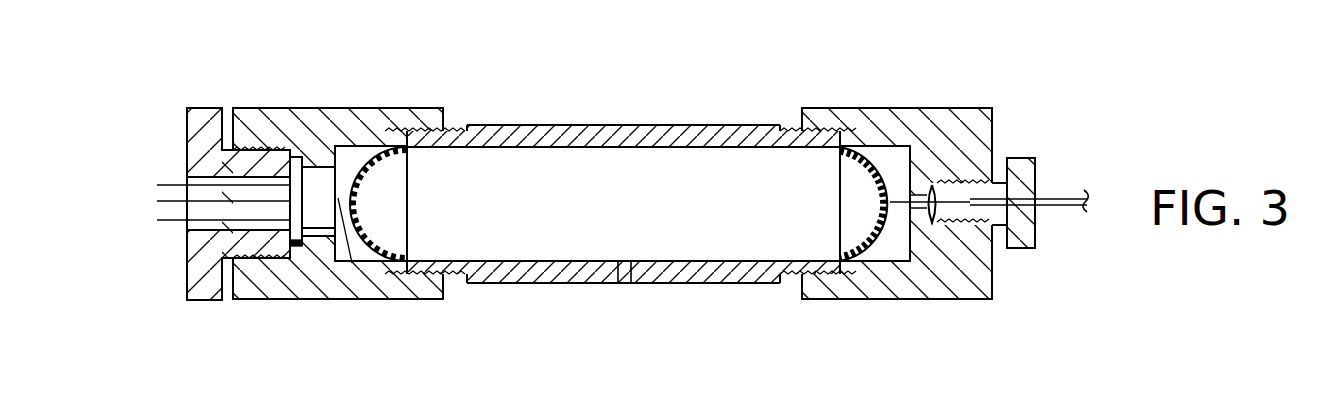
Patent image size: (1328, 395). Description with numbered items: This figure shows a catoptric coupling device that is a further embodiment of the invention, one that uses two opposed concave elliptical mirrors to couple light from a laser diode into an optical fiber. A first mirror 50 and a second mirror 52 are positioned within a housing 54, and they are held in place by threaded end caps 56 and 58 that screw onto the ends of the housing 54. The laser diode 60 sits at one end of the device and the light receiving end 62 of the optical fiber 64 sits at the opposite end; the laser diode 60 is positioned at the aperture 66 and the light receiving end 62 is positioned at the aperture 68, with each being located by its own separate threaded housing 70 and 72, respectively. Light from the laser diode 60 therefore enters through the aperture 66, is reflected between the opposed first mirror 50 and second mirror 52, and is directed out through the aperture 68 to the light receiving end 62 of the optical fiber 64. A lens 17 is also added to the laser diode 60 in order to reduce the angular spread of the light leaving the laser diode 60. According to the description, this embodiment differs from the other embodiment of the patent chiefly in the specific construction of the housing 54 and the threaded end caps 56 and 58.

The lens 17 is at (307, 250).
The first mirror 50 is at (398, 250).
The second mirror 52 is at (868, 243).
The housing 54 is at (625, 137).
The threaded end cap 56 is at (343, 125).
The threaded end cap 58 is at (930, 125).
The laser diode 60 is at (317, 185).
The light receiving end 62 is at (903, 197).
The optical fiber 64 is at (1063, 210).
The aperture 66 is at (350, 202).
The aperture 68 is at (880, 199).
The threaded housing 70 is at (198, 160).
The threaded housing 72 is at (1018, 170).